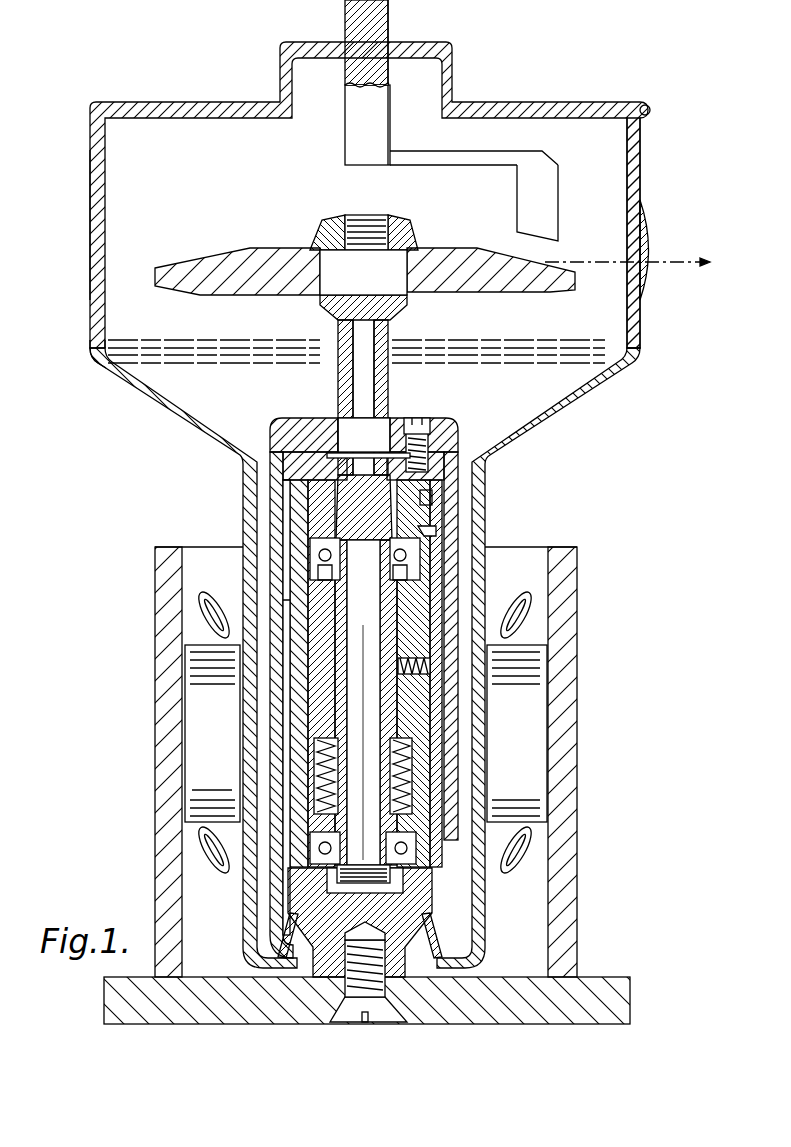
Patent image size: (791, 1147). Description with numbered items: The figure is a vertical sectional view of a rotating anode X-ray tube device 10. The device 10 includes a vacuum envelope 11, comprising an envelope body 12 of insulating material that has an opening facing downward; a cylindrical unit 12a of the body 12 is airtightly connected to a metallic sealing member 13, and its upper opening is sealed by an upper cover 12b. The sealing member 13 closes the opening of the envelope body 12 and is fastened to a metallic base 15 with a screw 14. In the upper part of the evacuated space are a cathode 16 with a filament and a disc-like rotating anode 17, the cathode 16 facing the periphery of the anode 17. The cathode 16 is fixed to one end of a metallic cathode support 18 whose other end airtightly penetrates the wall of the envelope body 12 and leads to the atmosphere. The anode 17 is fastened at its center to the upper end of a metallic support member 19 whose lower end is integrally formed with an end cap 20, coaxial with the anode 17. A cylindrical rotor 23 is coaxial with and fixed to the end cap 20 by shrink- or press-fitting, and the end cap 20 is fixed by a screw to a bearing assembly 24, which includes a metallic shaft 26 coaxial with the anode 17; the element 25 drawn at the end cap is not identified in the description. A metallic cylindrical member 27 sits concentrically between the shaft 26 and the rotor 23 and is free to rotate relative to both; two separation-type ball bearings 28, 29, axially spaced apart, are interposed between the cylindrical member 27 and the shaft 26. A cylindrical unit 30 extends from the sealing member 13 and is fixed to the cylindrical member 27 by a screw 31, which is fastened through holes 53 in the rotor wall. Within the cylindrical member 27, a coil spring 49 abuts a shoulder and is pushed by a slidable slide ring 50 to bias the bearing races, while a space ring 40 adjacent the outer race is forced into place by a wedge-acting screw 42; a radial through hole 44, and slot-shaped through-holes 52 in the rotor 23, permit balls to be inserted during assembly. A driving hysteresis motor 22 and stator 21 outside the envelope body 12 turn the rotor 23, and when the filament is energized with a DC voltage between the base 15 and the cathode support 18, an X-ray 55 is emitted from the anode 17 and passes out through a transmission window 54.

The rotating anode X-ray tube device 10 is at (82, 210).
The vacuum envelope 11 is at (192, 101).
The envelope body 12 is at (165, 410).
The cylindrical unit 12a is at (92, 345).
The upper cover 12b is at (548, 101).
The sealing member 13 is at (310, 900).
The screw 14 is at (348, 1010).
The base 15 is at (608, 987).
The cathode 16 is at (557, 185).
The rotating anode 17 is at (458, 248).
The cathode support 18 is at (485, 150).
The support member 19 is at (388, 300).
The end cap 20 is at (282, 418).
The stator 21 is at (535, 740).
The driving hysteresis motor 22 is at (520, 600).
The rotor 23 is at (450, 518).
The bearing assembly 24 is at (280, 495).
The screw 25 is at (428, 418).
The shaft 26 is at (393, 715).
The cylindrical member 27 is at (297, 685).
The ball bearing 28 is at (375, 578).
The ball bearing 29 is at (400, 870).
The cylindrical unit 30 is at (295, 718).
The screw 31 is at (430, 660).
The space ring 40 is at (300, 512).
The screw 42 is at (440, 500).
The through hole 44 is at (430, 530).
The coil spring 49 is at (393, 777).
The slide ring 50 is at (410, 868).
The through-holes 52 is at (278, 560).
The holes 53 is at (455, 683).
The transmission window 54 is at (648, 208).
The X-ray 55 is at (627, 246).